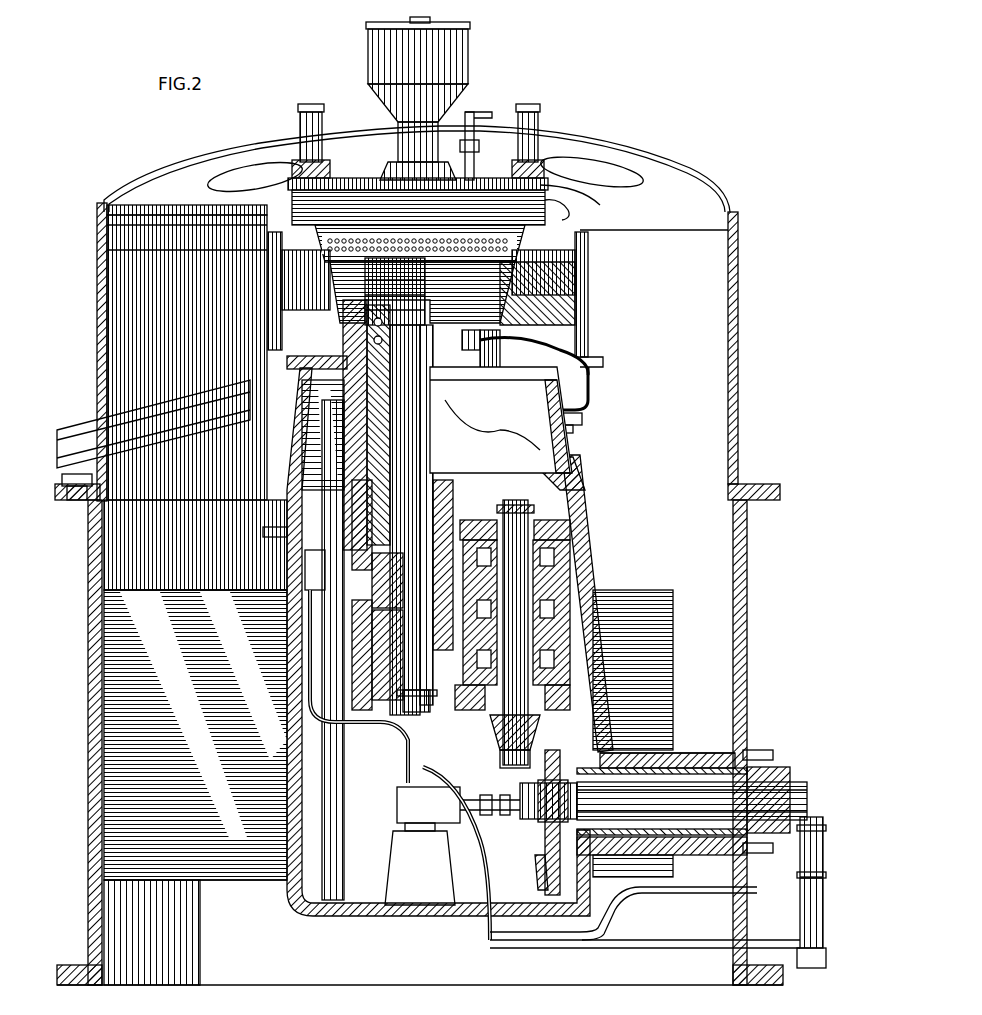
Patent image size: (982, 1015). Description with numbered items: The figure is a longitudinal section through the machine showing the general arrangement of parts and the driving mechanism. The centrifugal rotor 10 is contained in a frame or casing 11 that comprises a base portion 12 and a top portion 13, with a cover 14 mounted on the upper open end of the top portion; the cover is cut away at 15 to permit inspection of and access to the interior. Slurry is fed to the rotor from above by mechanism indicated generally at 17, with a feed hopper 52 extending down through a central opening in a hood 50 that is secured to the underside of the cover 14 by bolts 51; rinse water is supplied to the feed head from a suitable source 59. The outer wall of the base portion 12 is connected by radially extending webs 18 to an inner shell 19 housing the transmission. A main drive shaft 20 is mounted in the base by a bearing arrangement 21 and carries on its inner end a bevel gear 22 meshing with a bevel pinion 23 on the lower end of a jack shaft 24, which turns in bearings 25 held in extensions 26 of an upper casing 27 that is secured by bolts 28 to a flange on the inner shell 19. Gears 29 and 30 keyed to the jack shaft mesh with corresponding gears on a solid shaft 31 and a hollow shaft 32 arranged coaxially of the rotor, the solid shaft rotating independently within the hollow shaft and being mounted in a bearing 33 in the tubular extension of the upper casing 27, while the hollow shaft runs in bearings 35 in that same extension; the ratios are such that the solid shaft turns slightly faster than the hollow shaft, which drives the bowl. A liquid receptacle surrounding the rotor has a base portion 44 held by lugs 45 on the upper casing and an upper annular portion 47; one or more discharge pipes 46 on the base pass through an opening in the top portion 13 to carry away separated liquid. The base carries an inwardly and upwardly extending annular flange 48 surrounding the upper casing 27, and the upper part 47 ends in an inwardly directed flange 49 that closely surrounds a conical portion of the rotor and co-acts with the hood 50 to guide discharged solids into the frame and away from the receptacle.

The centrifugal rotor 10 is at (525, 232).
The frame or casing 11 is at (752, 502).
The base portion 12 is at (748, 582).
The top portion 13 is at (738, 362).
The cover 14 is at (688, 172).
The cut away 15 is at (283, 148).
The feed mechanism 17 is at (390, 124).
The radially extending webs 18 is at (258, 883).
The inner shell 19 is at (372, 920).
The main drive shaft 20 is at (726, 762).
The bearing arrangement 21 is at (545, 780).
The bevel gear 22 is at (537, 882).
The bevel pinion 23 is at (490, 735).
The jack shaft 24 is at (525, 565).
The bearings 25 is at (572, 505).
The extensions 26 is at (560, 540).
The upper casing 27 is at (570, 462).
The bolts 28 is at (270, 537).
The gear 29 is at (600, 612).
The gear 30 is at (572, 580).
The solid shaft 31 is at (455, 503).
The hollow shaft 32 is at (488, 508).
The bearing 33 is at (432, 696).
The bearings 35 is at (390, 335).
The base portion 44 is at (592, 386).
The lugs 45 is at (582, 418).
The discharge pipe 46 is at (85, 425).
The upper annular portion 47 is at (588, 300).
The annular flange 48 is at (500, 346).
The inwardly directed flange 49 is at (572, 212).
The hood 50 is at (554, 190).
The bolts 51 is at (528, 108).
The feed hopper 52 is at (470, 58).
The rinse water source 59 is at (474, 156).